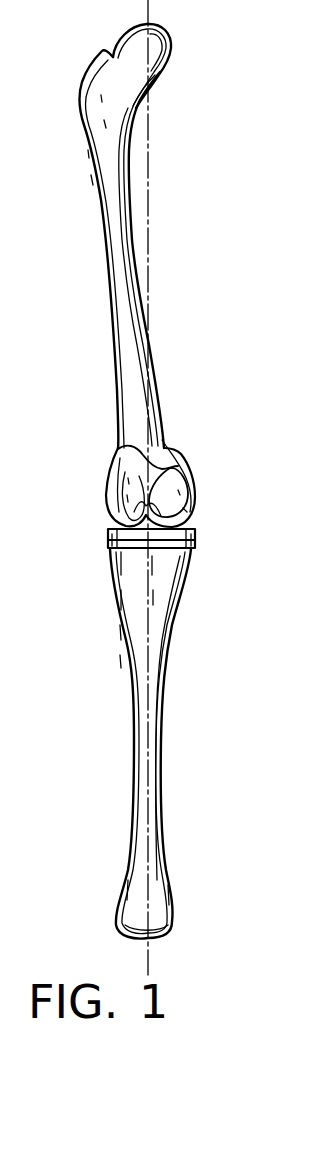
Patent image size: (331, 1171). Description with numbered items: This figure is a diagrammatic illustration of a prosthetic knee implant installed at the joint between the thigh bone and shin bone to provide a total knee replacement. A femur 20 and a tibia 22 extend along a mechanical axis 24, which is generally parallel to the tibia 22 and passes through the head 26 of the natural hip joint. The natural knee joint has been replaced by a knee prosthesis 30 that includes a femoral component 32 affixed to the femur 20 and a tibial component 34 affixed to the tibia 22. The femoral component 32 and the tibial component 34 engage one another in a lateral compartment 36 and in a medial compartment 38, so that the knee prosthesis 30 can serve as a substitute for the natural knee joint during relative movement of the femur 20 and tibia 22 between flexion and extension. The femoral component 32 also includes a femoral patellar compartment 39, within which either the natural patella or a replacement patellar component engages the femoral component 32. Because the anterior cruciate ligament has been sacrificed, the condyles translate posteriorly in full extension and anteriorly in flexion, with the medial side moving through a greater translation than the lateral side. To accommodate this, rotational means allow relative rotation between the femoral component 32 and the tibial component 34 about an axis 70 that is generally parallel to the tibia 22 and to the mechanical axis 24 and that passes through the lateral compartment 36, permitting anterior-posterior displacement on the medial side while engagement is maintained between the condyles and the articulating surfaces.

The femur 20 is at (136, 250).
The tibia 22 is at (165, 740).
The mechanical axis 24 is at (148, 172).
The head 26 is at (168, 43).
The knee prosthesis 30 is at (104, 523).
The femoral component 32 is at (106, 460).
The tibial component 34 is at (104, 544).
The lateral compartment 36 is at (110, 498).
The medial compartment 38 is at (186, 498).
The femoral patellar compartment 39 is at (164, 478).
The axis 70 is at (122, 628).